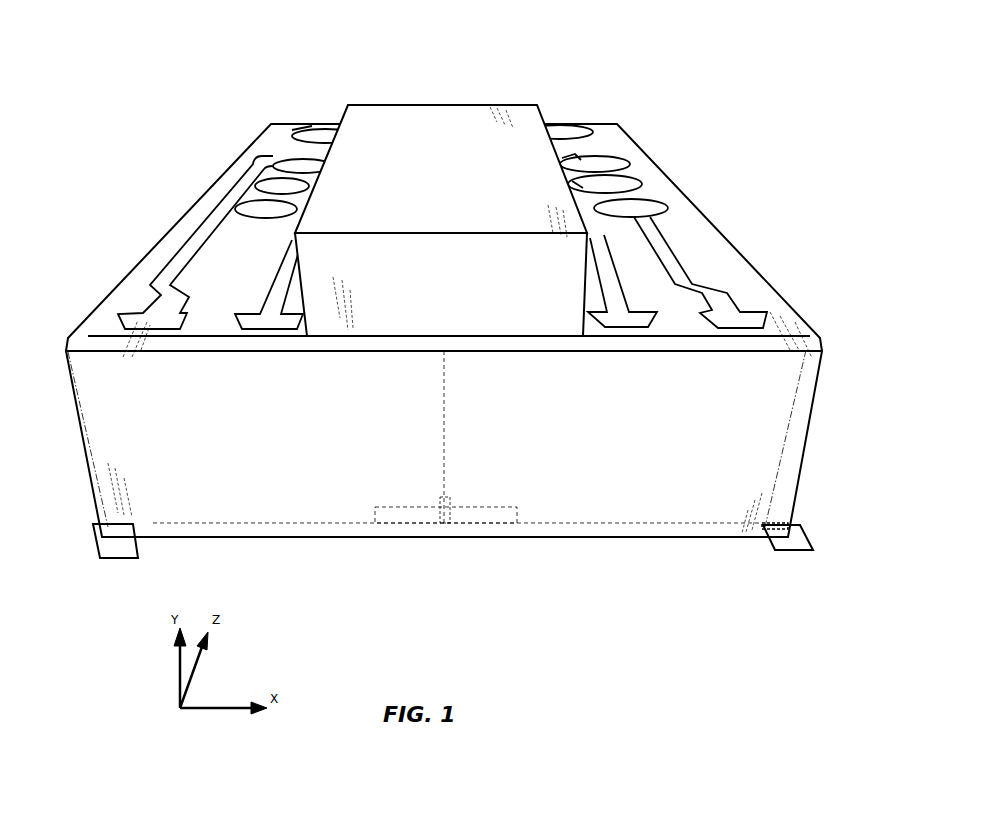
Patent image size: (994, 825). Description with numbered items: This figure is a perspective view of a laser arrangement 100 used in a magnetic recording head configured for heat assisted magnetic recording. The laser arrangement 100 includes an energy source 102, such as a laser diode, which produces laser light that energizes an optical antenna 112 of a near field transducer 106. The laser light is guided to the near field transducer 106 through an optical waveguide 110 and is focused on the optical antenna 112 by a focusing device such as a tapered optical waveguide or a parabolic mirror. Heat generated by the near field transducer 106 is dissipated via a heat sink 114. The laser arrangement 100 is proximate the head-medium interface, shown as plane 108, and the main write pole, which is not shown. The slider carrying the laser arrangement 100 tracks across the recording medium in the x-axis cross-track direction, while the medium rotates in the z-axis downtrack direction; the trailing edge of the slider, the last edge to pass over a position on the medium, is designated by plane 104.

The laser arrangement 100 is at (628, 68).
The energy source 102 is at (362, 105).
The plane designating the trailing edge 104 is at (122, 559).
The near field transducer 106 is at (452, 524).
The plane showing the head-medium interface 108 is at (805, 552).
The optical waveguide 110 is at (444, 418).
The optical antenna 112 is at (443, 524).
The heat sink 114 is at (392, 520).